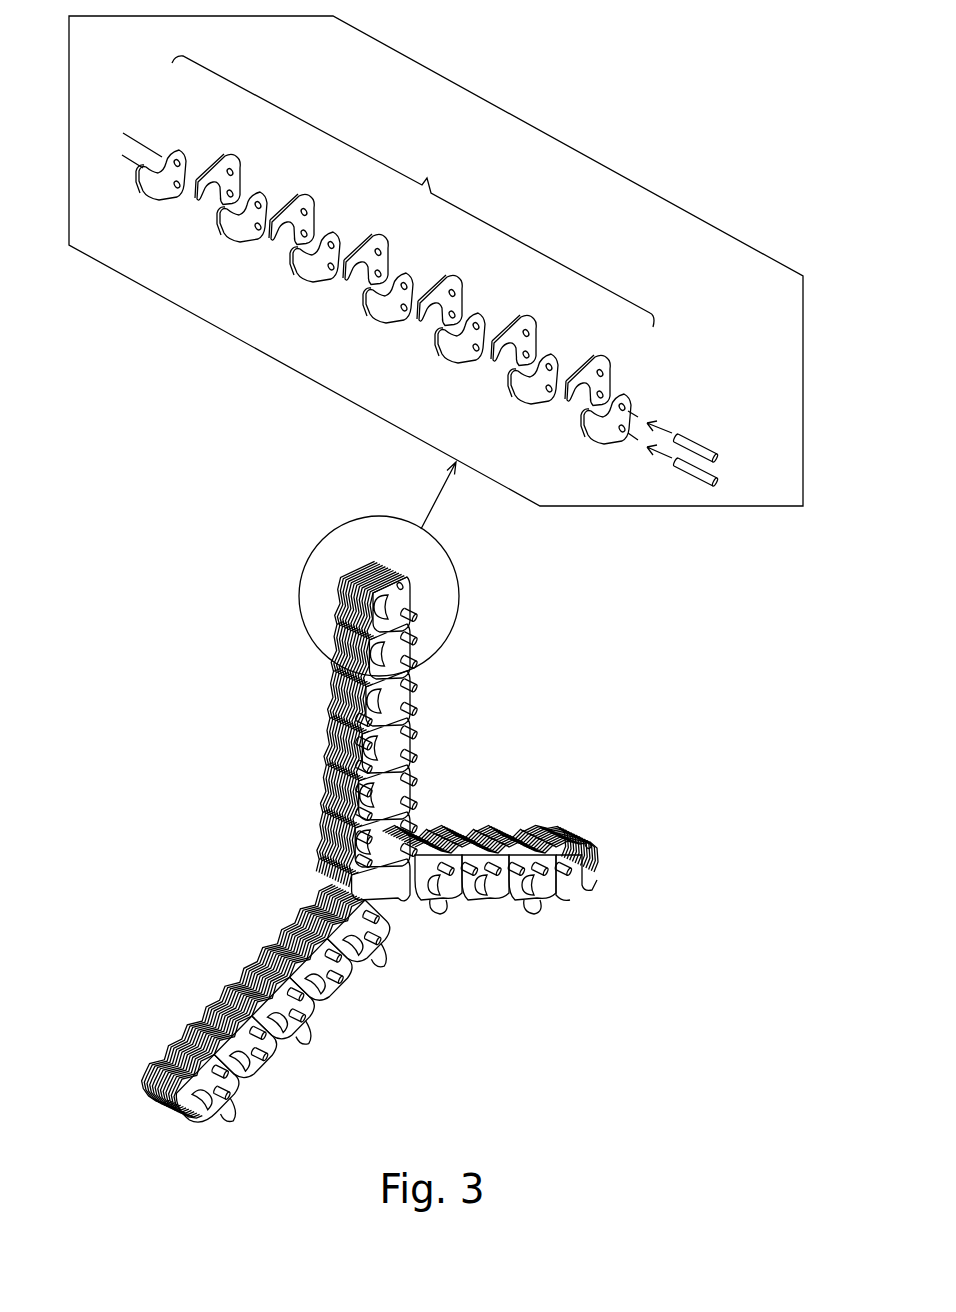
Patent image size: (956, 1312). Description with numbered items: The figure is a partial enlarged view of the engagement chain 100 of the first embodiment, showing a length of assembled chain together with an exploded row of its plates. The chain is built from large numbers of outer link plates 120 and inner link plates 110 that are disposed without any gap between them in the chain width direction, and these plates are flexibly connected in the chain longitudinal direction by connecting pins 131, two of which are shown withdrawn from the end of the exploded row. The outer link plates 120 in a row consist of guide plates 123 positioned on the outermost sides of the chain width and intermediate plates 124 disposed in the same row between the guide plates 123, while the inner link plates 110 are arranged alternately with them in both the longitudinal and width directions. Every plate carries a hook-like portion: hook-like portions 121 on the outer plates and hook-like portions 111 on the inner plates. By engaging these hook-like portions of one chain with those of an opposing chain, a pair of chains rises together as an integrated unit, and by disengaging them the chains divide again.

The engagement chain 100 is at (462, 895).
The inner link plate 110 is at (368, 316).
The hook-like portion 111 is at (193, 194).
The outer link plate 120 is at (413, 191).
The hook-like portion 121 is at (145, 173).
The guide plate 123 is at (178, 150).
The intermediate plate 124 is at (253, 192).
The connecting pin 131 is at (693, 444).